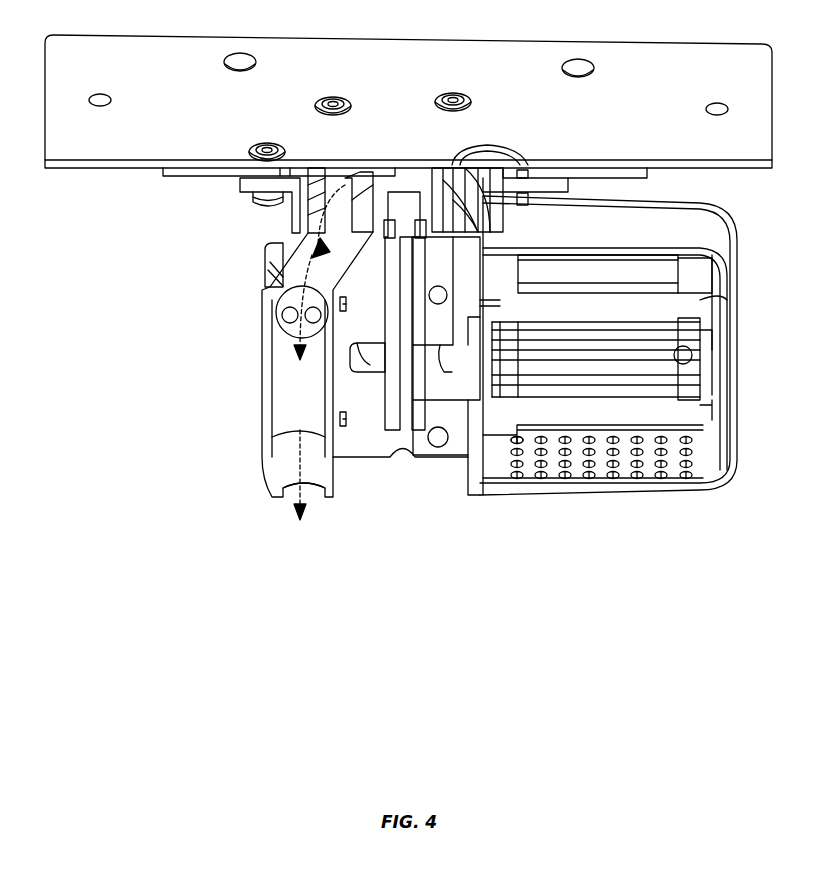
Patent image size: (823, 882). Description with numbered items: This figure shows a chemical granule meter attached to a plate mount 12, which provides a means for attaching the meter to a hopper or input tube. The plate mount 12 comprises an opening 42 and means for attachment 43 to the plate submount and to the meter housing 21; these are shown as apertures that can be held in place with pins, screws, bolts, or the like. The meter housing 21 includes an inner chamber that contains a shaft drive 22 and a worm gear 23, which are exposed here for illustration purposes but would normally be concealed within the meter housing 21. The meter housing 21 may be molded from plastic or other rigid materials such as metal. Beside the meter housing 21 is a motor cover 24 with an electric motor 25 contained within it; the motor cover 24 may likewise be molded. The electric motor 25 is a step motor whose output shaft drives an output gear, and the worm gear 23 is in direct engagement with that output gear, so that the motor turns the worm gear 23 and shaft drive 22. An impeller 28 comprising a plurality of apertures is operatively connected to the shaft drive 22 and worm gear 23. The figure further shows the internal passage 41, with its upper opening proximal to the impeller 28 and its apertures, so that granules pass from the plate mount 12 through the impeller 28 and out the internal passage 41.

The plate mount 12 is at (660, 58).
The means for attachment 43 is at (262, 147).
The opening 42 is at (477, 155).
The impeller 28 is at (315, 222).
The meter housing 21 is at (265, 462).
The internal passage 41 is at (310, 472).
The worm gear 23 is at (385, 370).
The shaft drive 22 is at (400, 402).
The motor cover 24 is at (703, 212).
The electric motor 25 is at (690, 300).